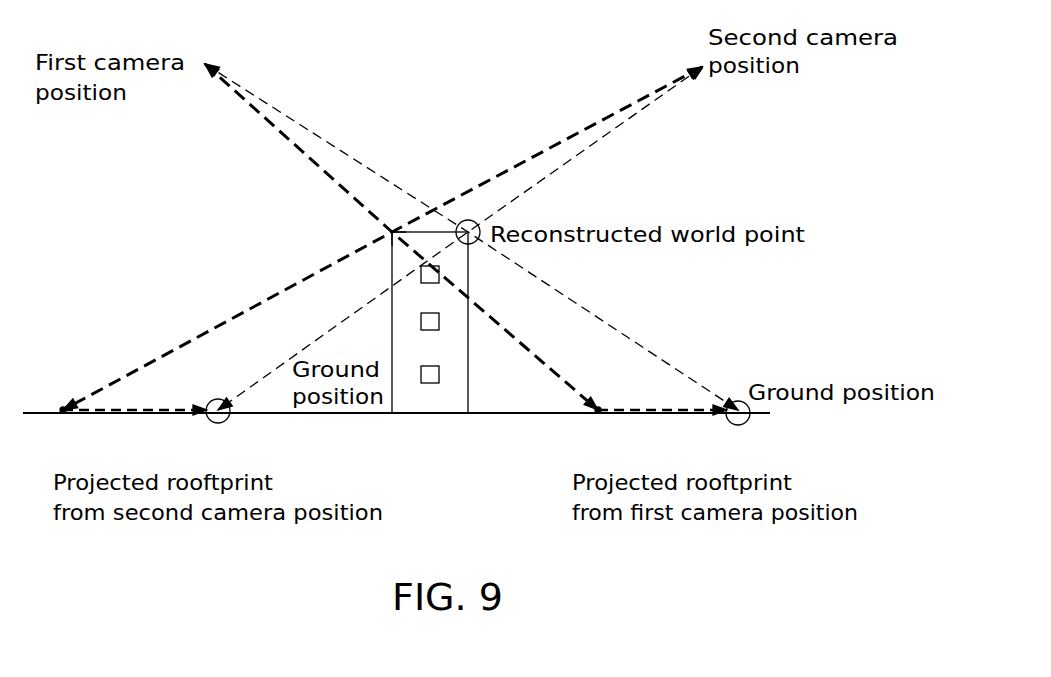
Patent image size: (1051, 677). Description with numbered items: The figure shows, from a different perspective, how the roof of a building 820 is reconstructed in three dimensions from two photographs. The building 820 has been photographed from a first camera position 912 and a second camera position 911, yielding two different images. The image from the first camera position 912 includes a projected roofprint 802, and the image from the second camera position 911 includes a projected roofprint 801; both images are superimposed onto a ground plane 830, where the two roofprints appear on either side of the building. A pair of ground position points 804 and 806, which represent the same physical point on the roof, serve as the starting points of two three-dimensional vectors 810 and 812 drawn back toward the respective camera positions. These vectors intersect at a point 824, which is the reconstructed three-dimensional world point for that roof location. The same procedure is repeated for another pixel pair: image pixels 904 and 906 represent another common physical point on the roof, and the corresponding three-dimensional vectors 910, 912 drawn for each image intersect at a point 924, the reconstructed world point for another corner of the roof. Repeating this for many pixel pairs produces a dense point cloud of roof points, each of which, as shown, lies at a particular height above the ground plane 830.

The projected roofprint 801 is at (137, 408).
The projected roofprint 802 is at (672, 408).
The ground position point 804 is at (226, 421).
The ground position point 806 is at (745, 420).
The 3-D vector 810 is at (302, 352).
The 3-D vector 812 is at (628, 332).
The building 820 is at (418, 396).
The reconstructed 3-D world point 824 is at (468, 222).
The ground plane 830 is at (520, 415).
The image pixel 904 is at (63, 406).
The image pixel 906 is at (598, 406).
The 3-D vector 910 is at (295, 285).
The second camera position 911 is at (678, 88).
The first camera position 912 is at (246, 69).
The reconstructed 3-D world point 924 is at (388, 232).